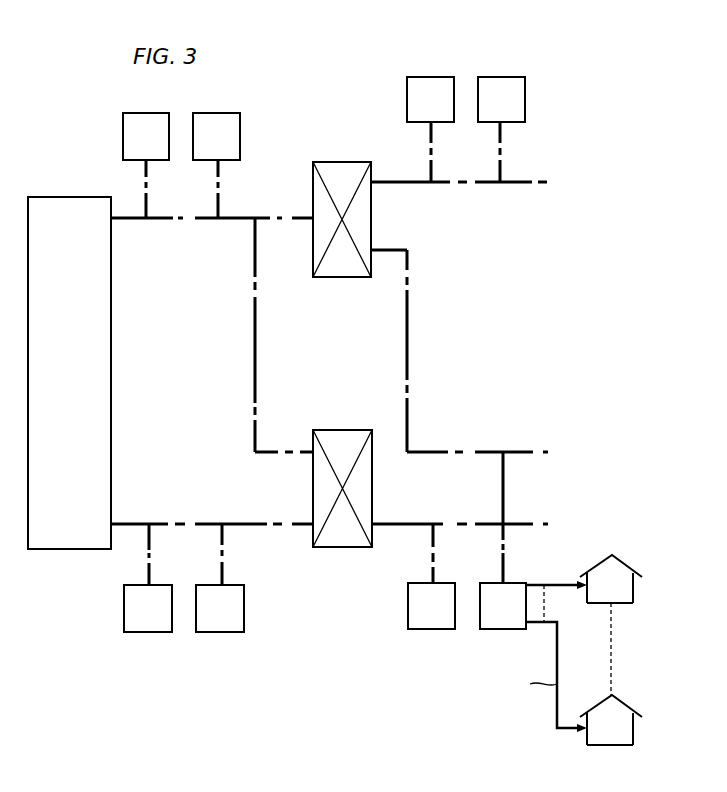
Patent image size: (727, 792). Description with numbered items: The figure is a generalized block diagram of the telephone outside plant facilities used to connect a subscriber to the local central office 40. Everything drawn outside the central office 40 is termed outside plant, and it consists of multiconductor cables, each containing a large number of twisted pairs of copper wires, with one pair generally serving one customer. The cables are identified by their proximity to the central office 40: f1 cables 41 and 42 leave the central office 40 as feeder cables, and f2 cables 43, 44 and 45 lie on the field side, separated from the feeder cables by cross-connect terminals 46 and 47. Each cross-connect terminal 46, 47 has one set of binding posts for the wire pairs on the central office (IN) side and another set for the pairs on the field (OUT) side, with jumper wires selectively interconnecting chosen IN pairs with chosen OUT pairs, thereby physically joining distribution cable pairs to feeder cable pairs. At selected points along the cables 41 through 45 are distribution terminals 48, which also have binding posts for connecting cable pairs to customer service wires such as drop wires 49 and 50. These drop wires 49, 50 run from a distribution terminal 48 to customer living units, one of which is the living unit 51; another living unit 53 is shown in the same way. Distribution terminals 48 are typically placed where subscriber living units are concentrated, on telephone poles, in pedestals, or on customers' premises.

The central office 40 is at (78, 549).
The f1 cable 41 is at (156, 220).
The f1 cable 42 is at (137, 523).
The f2 cable 43 is at (493, 184).
The f2 cable 44 is at (522, 450).
The f2 cable 45 is at (522, 521).
The cross-connect terminal 46 is at (343, 278).
The cross-connect terminal 47 is at (345, 548).
The distribution terminal 48 is at (193, 140).
The drop wire 49 is at (557, 712).
The drop wire 50 is at (552, 585).
The customer living unit 51 is at (633, 729).
The living unit 53 is at (633, 589).